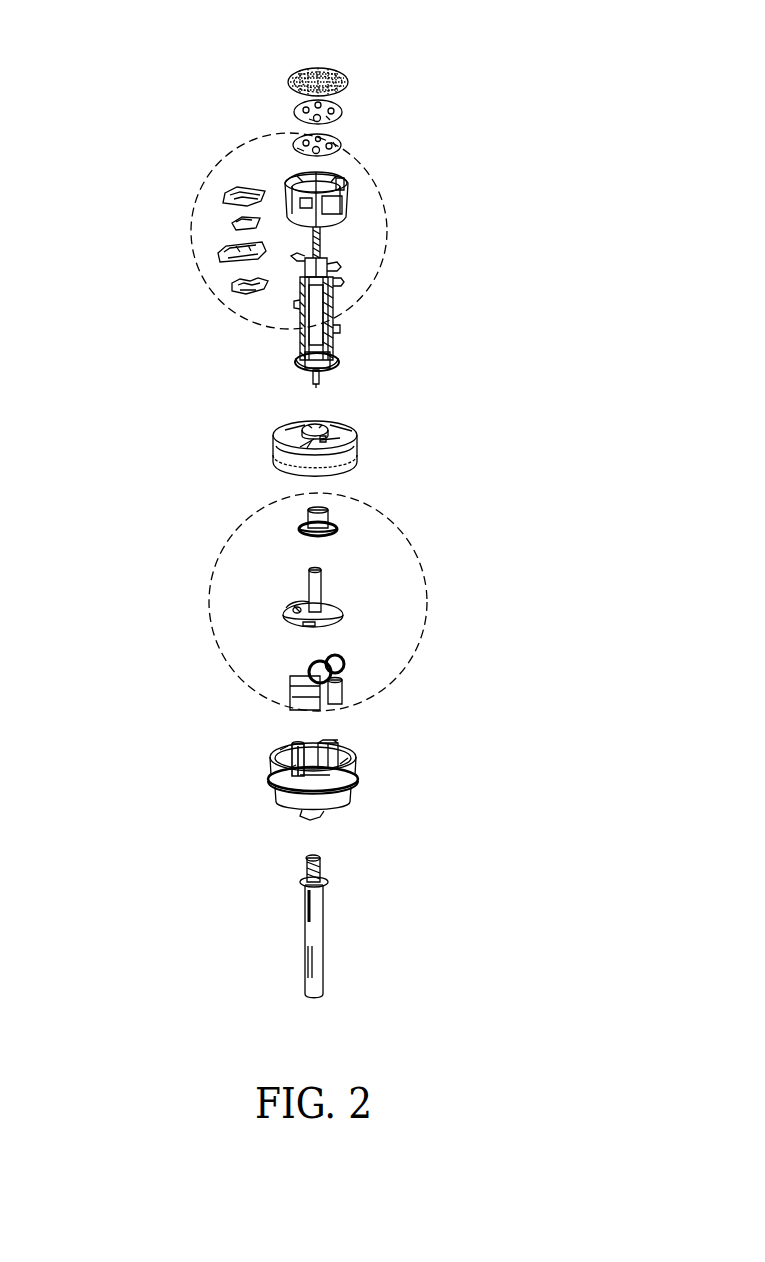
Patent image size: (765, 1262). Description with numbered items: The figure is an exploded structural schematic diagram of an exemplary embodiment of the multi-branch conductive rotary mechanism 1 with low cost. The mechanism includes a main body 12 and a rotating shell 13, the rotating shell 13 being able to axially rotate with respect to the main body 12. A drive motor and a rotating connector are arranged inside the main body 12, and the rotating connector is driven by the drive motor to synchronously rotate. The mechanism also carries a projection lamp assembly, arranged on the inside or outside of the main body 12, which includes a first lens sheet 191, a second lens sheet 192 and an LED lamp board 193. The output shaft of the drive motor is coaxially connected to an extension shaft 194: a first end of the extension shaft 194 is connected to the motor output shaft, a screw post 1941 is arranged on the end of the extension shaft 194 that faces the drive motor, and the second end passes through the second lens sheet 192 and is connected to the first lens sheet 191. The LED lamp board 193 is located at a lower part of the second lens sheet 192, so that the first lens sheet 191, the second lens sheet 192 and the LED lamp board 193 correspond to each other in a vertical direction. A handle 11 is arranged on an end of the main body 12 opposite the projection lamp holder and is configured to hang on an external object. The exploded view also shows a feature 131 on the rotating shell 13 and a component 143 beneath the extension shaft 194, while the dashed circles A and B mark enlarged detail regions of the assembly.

The multi-branch conductive rotary mechanism 1 is at (337, 28).
The handle 11 is at (318, 930).
The main body 12 is at (357, 793).
The rotating shell 13 is at (278, 447).
The drum coupling feature 131 is at (302, 422).
The pump body 143 is at (332, 372).
The first lens sheet 191 is at (348, 83).
The second lens sheet 192 is at (342, 115).
The LED lamp board 193 is at (295, 138).
The extension shaft 194 is at (343, 226).
The screw post 1941 is at (318, 386).
The detail region A is at (222, 655).
The detail region B is at (383, 263).